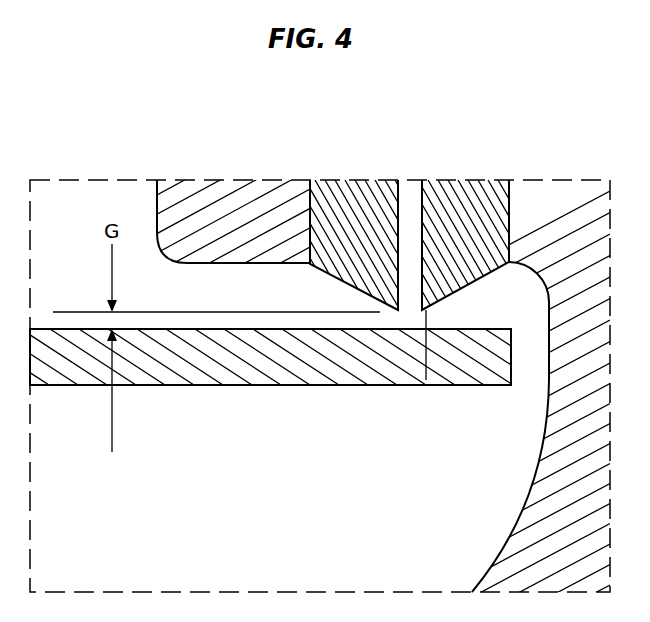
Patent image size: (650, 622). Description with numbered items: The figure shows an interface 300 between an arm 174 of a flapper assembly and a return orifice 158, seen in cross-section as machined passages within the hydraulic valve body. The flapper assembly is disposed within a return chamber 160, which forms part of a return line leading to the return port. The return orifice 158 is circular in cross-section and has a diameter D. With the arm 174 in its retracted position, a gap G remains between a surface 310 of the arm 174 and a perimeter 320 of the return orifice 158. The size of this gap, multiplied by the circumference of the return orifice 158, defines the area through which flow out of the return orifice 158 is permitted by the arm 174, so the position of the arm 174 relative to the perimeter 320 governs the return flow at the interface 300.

The return chamber 160 is at (72, 204).
The arm 174 is at (229, 386).
The return orifice 158 is at (406, 313).
The perimeter 320 is at (426, 380).
The surface 310 is at (476, 328).
The interface 300 is at (397, 450).